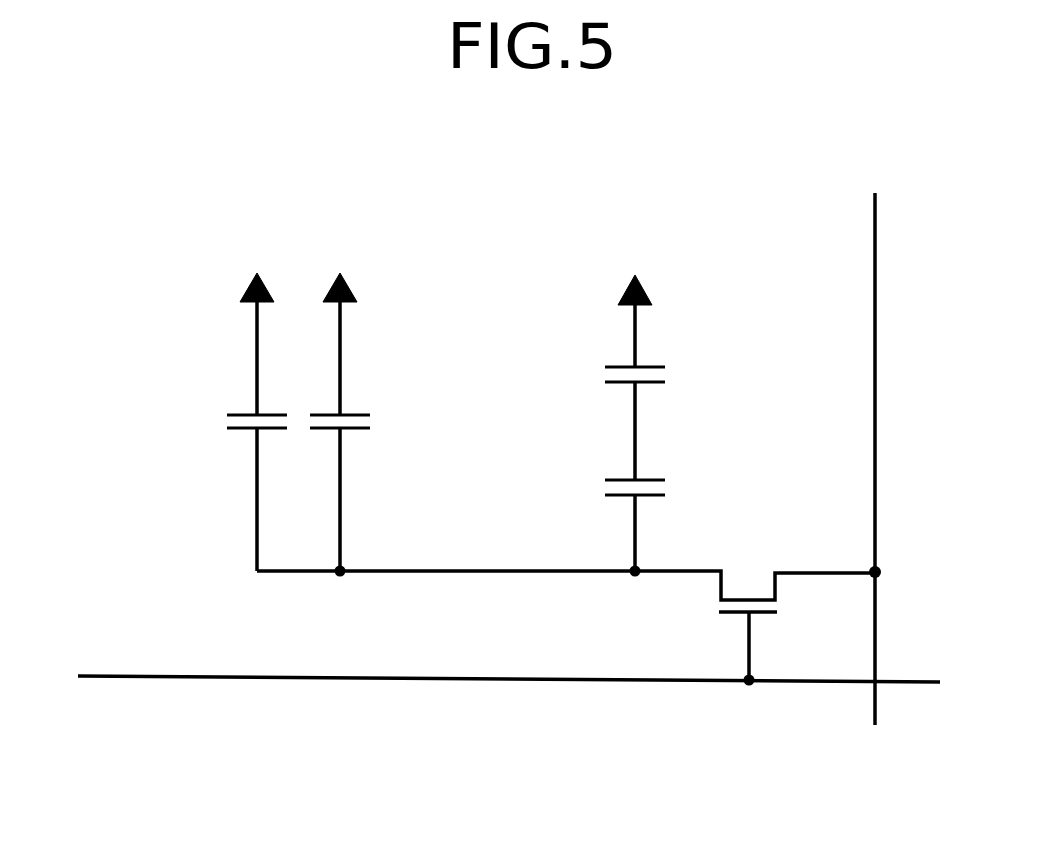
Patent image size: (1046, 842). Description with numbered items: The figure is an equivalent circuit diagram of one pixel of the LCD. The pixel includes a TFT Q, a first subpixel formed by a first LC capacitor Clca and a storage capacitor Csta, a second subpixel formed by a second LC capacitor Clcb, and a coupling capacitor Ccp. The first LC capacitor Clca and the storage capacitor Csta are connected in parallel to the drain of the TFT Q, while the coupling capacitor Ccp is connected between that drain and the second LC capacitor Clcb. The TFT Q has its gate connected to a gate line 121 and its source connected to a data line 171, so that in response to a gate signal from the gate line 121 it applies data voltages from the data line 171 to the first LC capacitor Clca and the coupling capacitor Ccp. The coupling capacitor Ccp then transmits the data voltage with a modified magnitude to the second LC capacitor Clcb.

The data line 171 is at (877, 420).
The gate line 121 is at (815, 684).
The TFT Q is at (566, 610).
The first LC capacitor Clca is at (218, 422).
The storage capacitor Csta is at (380, 425).
The second LC capacitor Clcb is at (595, 377).
The coupling capacitor Ccp is at (597, 523).